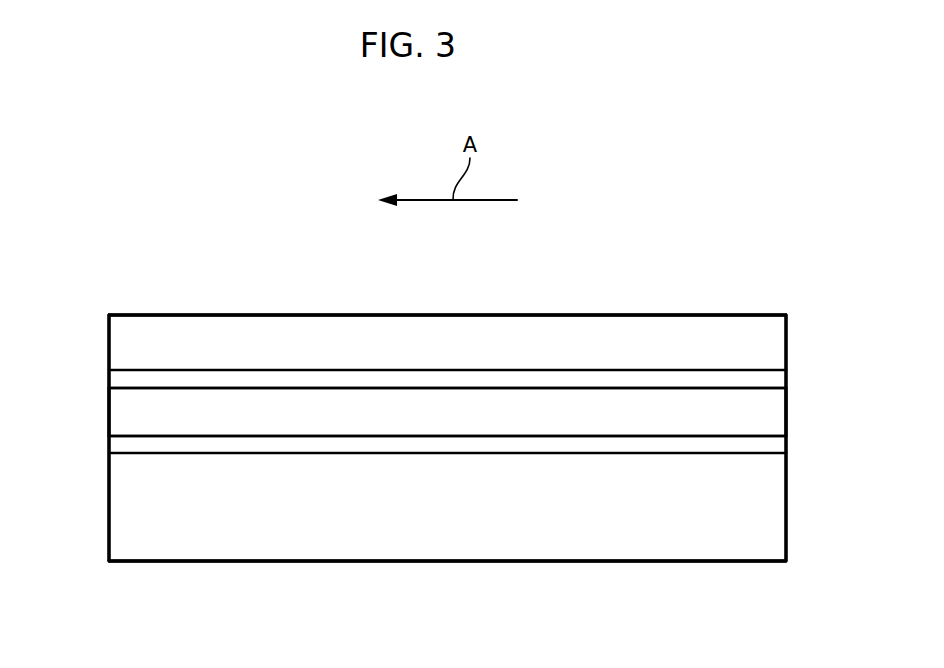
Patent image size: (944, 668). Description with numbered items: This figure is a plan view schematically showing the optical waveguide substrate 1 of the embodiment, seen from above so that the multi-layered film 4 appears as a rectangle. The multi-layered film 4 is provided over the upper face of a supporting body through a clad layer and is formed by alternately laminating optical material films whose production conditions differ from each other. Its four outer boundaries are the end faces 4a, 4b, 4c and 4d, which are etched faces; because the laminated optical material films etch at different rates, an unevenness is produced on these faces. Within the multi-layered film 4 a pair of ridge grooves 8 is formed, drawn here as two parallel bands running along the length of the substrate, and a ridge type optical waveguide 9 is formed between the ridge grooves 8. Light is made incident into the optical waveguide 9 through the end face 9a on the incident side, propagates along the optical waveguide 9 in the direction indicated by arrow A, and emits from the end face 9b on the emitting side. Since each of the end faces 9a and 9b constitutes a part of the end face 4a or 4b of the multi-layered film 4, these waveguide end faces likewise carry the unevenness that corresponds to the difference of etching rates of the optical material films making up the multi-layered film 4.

The optical waveguide substrate 1 is at (792, 268).
The multi-layered film 4 is at (843, 316).
The end face 4a is at (787, 350).
The end face 4b is at (108, 346).
The end face 4c is at (457, 315).
The end face 4d is at (471, 562).
The ridge grooves 8 is at (674, 445).
The ridge type optical waveguide 9 is at (571, 413).
The end face on the incident side 9a is at (786, 414).
The end face on the emitting side 9b is at (108, 415).